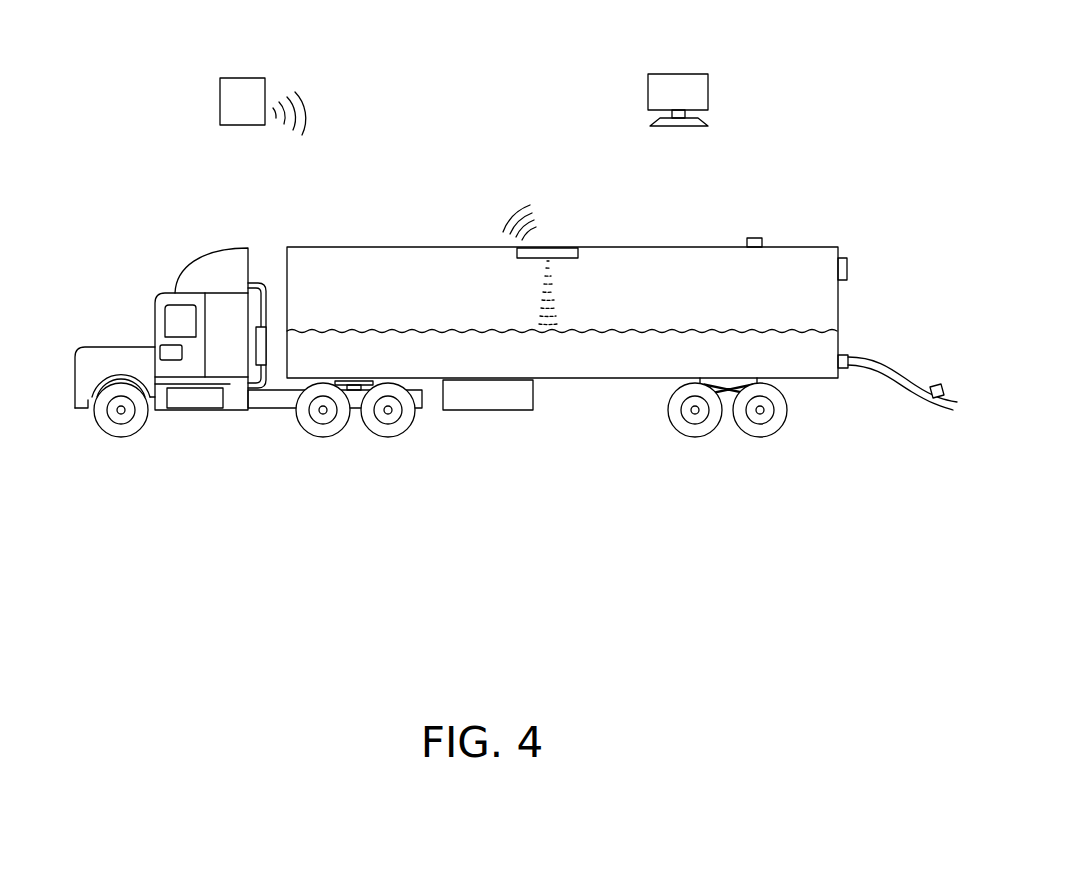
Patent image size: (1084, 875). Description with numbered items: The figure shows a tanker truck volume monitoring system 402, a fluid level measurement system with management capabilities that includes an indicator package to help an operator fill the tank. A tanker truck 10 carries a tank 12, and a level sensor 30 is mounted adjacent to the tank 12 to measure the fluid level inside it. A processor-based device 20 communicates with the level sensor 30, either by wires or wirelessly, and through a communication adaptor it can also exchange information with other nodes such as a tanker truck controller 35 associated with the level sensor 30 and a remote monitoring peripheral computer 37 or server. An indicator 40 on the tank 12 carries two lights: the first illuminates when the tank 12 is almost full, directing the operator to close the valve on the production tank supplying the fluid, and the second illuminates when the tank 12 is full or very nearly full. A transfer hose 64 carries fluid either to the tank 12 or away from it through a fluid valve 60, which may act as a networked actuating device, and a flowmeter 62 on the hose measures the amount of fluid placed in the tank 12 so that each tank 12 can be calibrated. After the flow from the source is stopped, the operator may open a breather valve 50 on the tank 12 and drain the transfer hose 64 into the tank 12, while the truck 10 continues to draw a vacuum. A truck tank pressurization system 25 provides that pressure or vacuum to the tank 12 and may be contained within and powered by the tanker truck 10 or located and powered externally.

The tanker truck volume monitoring system 402 is at (117, 102).
The tanker truck 10 is at (137, 257).
The tank 12 is at (571, 381).
The processor-based device 20 is at (248, 78).
The truck tank pressurization system 25 is at (480, 412).
The level sensor 30 is at (570, 247).
The tanker truck controller 35 is at (170, 350).
The remote monitoring peripheral computer 37 is at (678, 74).
The indicator 40 is at (843, 257).
The breather valve 50 is at (755, 237).
The fluid valve 60 is at (840, 370).
The flowmeter 62 is at (937, 385).
The transfer hose 64 is at (897, 373).